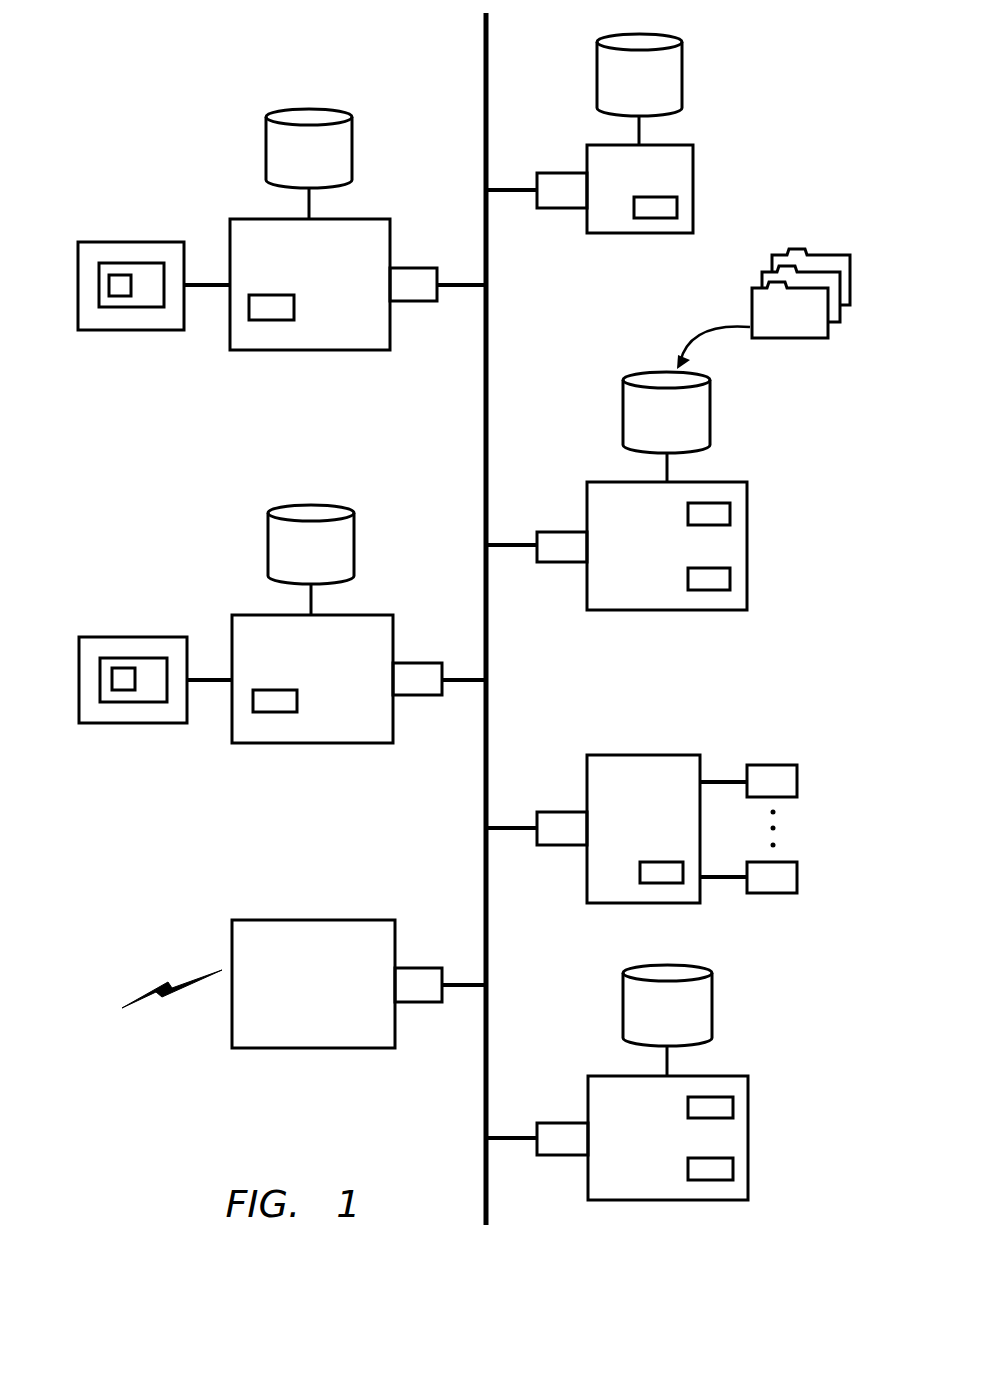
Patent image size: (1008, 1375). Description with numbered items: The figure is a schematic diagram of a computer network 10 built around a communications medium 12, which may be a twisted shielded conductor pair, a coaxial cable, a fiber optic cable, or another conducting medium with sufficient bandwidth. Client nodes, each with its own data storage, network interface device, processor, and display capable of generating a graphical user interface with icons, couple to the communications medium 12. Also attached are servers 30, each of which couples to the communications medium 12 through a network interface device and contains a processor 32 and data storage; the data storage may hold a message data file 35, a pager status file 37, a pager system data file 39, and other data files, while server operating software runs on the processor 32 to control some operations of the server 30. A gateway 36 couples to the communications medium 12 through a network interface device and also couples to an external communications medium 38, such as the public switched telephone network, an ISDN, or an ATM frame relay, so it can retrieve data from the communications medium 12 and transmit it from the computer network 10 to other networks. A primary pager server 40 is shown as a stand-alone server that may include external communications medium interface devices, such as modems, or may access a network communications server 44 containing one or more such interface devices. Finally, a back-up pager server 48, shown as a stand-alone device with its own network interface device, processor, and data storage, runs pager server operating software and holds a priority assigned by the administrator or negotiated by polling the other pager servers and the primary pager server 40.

The computer network 10 is at (168, 60).
The communications medium 12 is at (484, 83).
The server 30 is at (647, 235).
The processor 32 is at (680, 208).
The message data file 35 is at (852, 280).
The gateway 36 is at (313, 1050).
The pager status file 37 is at (842, 312).
The external communications medium 38 is at (178, 980).
The pager system data file 39 is at (830, 332).
The primary pager server 40 is at (668, 612).
The network communications server 44 is at (643, 753).
The back-up pager server 48 is at (668, 1202).